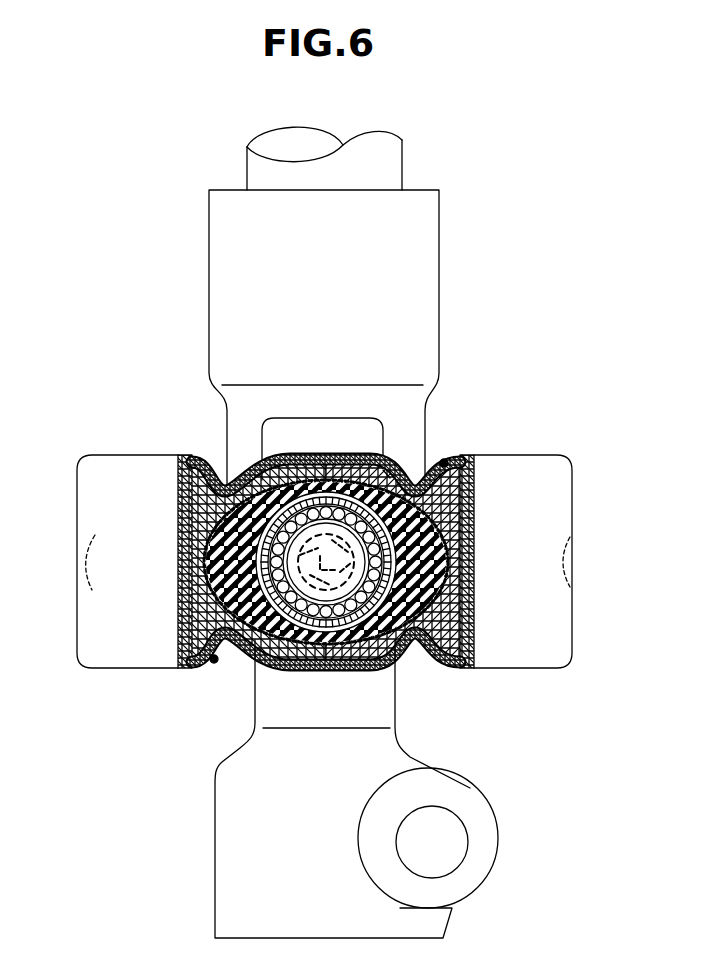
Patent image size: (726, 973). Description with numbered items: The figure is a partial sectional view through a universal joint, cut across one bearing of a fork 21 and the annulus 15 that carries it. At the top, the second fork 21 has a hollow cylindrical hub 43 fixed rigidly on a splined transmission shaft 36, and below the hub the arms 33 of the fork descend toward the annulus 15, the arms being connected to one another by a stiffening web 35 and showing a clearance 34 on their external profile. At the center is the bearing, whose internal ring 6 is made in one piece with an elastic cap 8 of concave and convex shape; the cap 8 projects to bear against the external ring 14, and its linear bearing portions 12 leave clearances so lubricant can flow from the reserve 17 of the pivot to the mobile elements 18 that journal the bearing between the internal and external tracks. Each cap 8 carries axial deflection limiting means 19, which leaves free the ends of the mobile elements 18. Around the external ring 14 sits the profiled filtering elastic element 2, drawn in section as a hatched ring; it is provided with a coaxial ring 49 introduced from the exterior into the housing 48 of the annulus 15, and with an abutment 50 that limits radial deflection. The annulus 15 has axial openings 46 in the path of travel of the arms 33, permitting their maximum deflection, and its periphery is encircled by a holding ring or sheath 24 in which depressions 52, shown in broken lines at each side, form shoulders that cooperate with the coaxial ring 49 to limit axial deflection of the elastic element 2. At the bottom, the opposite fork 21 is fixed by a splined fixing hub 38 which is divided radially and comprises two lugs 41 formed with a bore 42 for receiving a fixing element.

The filtering-action elastic element 2 is at (465, 522).
The internal ring 6 is at (382, 462).
The elastic cap 8 is at (232, 493).
The linear bearing portions 12 is at (378, 492).
The external ring 14 is at (217, 527).
The annulus 15 is at (455, 613).
The lubricant reserve 17 is at (460, 585).
The mobile elements 18 is at (235, 640).
The axial deflection limiting means 19 is at (255, 480).
The fork 21 is at (362, 395).
The holding ring or sheath 24 is at (450, 657).
The arm 33 is at (238, 447).
The clearance 34 is at (223, 405).
The stiffening web 35 is at (306, 418).
The transmission shaft 36 is at (393, 153).
The fixing hub 38 is at (240, 895).
The lug 41 is at (455, 893).
The bore 42 is at (458, 847).
The hollow cylindrical hub 43 is at (240, 237).
The axial opening 46 is at (468, 455).
The housing 48 is at (178, 647).
The coaxial ring 49 is at (442, 466).
The abutment 50 is at (340, 662).
The depression 52 is at (80, 543).